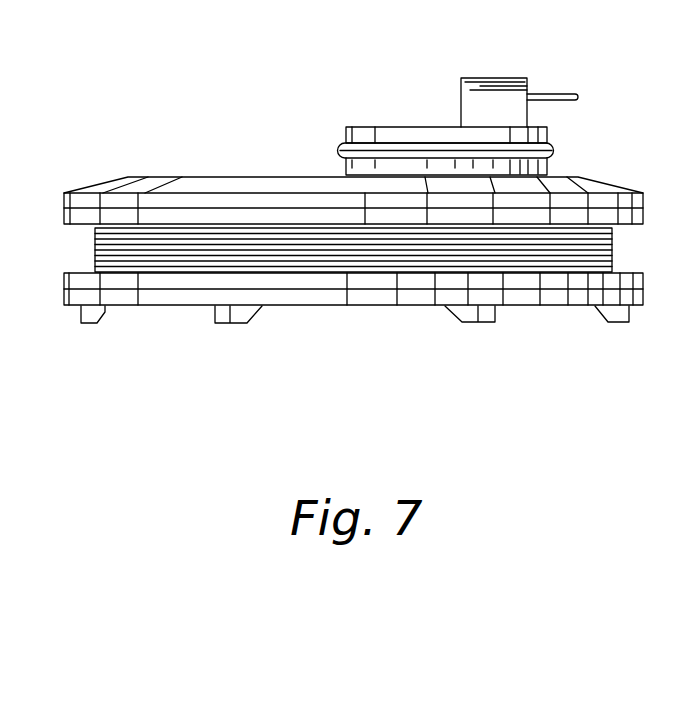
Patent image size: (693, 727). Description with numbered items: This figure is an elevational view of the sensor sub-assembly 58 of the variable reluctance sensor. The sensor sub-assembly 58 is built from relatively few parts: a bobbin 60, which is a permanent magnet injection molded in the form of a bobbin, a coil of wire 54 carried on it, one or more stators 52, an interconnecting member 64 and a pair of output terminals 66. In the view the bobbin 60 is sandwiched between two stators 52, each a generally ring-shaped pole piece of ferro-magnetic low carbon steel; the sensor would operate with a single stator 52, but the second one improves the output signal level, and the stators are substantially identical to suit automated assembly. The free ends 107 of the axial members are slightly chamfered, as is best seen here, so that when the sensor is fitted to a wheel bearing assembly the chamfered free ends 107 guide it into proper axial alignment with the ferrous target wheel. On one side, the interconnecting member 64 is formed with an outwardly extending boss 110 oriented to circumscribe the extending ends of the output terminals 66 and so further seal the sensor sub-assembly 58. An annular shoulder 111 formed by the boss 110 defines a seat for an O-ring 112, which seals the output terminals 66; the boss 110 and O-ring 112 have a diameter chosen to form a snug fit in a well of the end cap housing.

The stator 52 is at (85, 203).
The coil of wire 54 is at (605, 245).
The sensor sub-assembly 58 is at (233, 127).
The bobbin 60 is at (77, 282).
The interconnecting member 64 is at (200, 185).
The output terminals 66 is at (561, 97).
The free ends of the axial members 107 is at (617, 313).
The boss 110 is at (578, 144).
The annular shoulder 111 is at (345, 137).
The O-ring 112 is at (338, 152).